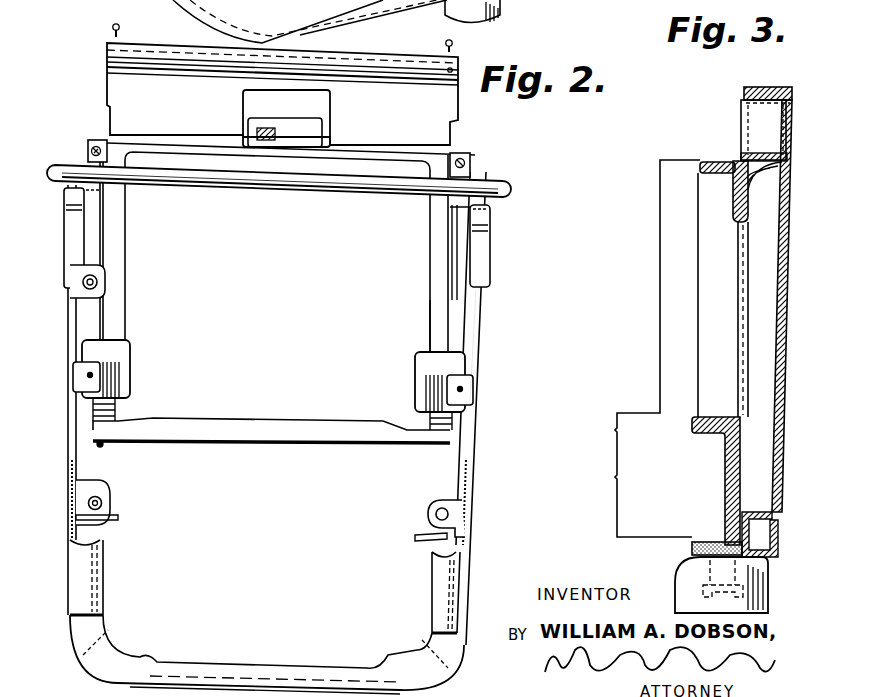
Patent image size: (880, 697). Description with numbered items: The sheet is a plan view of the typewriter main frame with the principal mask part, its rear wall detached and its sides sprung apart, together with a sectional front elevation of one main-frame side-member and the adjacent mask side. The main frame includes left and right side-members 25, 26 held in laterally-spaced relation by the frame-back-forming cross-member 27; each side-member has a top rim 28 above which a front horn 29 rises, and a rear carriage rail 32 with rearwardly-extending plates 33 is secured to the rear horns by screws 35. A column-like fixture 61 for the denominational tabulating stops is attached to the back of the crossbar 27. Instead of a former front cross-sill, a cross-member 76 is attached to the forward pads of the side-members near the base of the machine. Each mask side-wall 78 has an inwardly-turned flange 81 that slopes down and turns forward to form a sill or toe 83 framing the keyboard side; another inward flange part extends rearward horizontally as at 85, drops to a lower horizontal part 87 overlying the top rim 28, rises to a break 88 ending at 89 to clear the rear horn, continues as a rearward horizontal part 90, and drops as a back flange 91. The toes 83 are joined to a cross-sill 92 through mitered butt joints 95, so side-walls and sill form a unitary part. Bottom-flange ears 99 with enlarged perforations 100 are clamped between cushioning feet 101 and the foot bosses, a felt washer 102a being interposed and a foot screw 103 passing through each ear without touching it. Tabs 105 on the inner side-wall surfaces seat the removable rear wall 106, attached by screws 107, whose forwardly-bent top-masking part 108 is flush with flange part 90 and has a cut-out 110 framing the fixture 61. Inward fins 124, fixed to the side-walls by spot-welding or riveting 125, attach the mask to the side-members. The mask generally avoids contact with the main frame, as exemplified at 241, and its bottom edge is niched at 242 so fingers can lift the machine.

In FIG. 2, the left side-member 25 is at (112, 265).
In FIG. 2, the right side-member 26 is at (437, 290).
In FIG. 3, the right side-member 26 is at (728, 470).
In FIG. 2, the frame-back-forming cross-member 27 is at (218, 152).
In FIG. 3, the frame-back-forming cross-member 27 is at (622, 483).
In FIG. 3, the top rim 28 is at (708, 162).
In FIG. 2, the front horn 29 is at (100, 377).
In FIG. 2, the rear carriage rail 32 is at (326, 183).
In FIG. 2, the rearwardly-extending plates 33 is at (89, 146).
In FIG. 2, the screws 35 is at (88, 153).
In FIG. 2, the column-like fixture 61 is at (302, 135).
In FIG. 2, the cross-member 76 is at (265, 432).
In FIG. 2, the side-wall 78 is at (55, 485).
In FIG. 3, the side-wall 78 is at (783, 322).
In FIG. 2, the inwardly-turned flange 81 is at (85, 570).
In FIG. 2, the sill or toe 83 is at (288, 0).
In FIG. 2, the horizontal rearward flange part 85 is at (465, 435).
In FIG. 2, the lower horizontal flange part 87 is at (470, 340).
In FIG. 3, the lower horizontal flange part 87 is at (745, 153).
In FIG. 2, the break 88 is at (72, 296).
In FIG. 2, the end of break 89 is at (80, 265).
In FIG. 2, the rearwardly horizontal flange part 90 is at (72, 228).
In FIG. 3, the rearwardly horizontal flange part 90 is at (768, 88).
In FIG. 2, the back flange 91 is at (486, 220).
In FIG. 2, the cross-sill 92 is at (248, 672).
In FIG. 2, the mitered joint 95 is at (103, 646).
In FIG. 2, the ears 99 is at (88, 500).
In FIG. 3, the ears 99 is at (690, 548).
In FIG. 2, the perforations 100 is at (102, 503).
In FIG. 2, the cushioning feet 101 is at (499, 13).
In FIG. 3, the cushioning feet 101 is at (688, 582).
In FIG. 3, the washer 102a is at (706, 541).
In FIG. 3, the foot screw 103 is at (768, 586).
In FIG. 2, the tabs 105 is at (455, 210).
In FIG. 2, the rear wall 106 is at (185, 58).
In FIG. 2, the screws 107 is at (110, 32).
In FIG. 2, the top-masking part 108 is at (390, 114).
In FIG. 2, the cut-out 110 is at (243, 104).
In FIG. 2, the wings or fins 124 is at (425, 536).
In FIG. 2, the spot-welding or riveting 125 is at (462, 538).
In FIG. 3, the non-contact clearance 241 is at (782, 145).
In FIG. 3, the side niche 242 is at (771, 524).